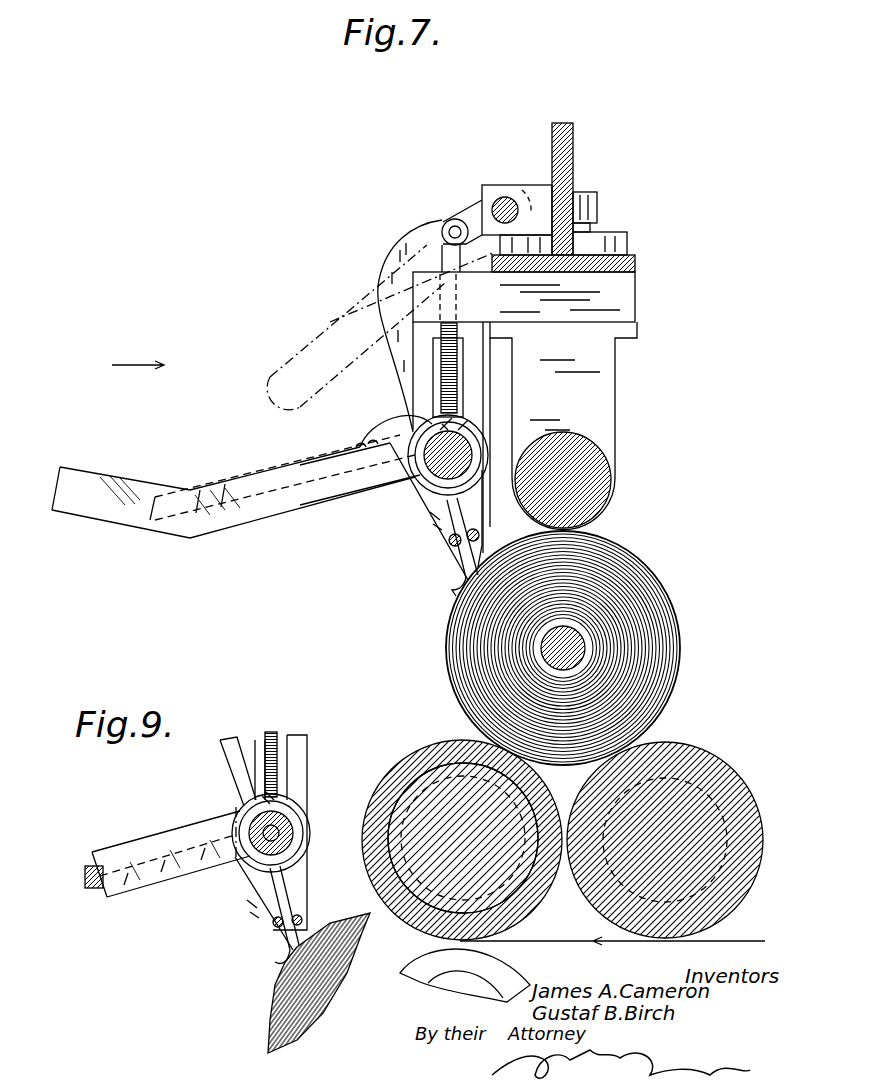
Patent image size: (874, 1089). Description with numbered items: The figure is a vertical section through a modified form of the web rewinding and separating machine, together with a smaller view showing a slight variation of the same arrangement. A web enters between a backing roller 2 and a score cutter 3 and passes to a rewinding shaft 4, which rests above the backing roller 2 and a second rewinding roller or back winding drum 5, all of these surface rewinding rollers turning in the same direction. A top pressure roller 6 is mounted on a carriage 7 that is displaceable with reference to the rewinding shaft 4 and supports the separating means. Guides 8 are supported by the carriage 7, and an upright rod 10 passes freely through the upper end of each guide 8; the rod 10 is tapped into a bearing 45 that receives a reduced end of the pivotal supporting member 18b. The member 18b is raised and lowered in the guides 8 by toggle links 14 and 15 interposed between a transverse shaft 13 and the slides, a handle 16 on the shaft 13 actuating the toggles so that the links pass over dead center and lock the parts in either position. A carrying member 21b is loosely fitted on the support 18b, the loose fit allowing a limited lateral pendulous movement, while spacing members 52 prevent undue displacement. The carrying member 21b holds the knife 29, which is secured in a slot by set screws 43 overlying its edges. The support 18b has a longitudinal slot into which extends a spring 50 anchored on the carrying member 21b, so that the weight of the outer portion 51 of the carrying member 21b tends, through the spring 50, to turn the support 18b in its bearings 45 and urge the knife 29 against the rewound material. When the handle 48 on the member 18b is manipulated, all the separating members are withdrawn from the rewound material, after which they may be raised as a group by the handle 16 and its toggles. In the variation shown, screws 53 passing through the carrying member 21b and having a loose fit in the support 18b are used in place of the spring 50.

In FIG. 7, the backing roller 2 is at (430, 750).
In FIG. 7, the score cutter 3 is at (512, 969).
In FIG. 7, the rewinding shaft 4 is at (582, 653).
In FIG. 7, the second rewinding roller 5 is at (745, 801).
In FIG. 7, the top pressure roller 6 is at (607, 478).
In FIG. 7, the carriage 7 is at (563, 426).
In FIG. 7, the guides 8 is at (138, 355).
In FIG. 9, the upright rod 10 is at (272, 735).
In FIG. 7, the transverse shaft 13 is at (503, 196).
In FIG. 7, the toggle link 14 is at (393, 243).
In FIG. 7, the toggle link 15 is at (462, 203).
In FIG. 7, the handle 16 is at (305, 343).
In FIG. 9, the pivotal supporting member 18b is at (300, 833).
In FIG. 7, the carrying member 21b is at (371, 480).
In FIG. 9, the carrying member 21b is at (198, 864).
In FIG. 7, the knife 29 is at (482, 565).
In FIG. 9, the knife 29 is at (302, 952).
In FIG. 7, the set screws 43 is at (453, 553).
In FIG. 9, the set screws 43 is at (283, 940).
In FIG. 7, the bearings 45 is at (488, 447).
In FIG. 9, the bearings 45 is at (307, 817).
In FIG. 7, the handle 48 is at (200, 492).
In FIG. 7, the spring 50 is at (388, 413).
In FIG. 7, the outer portion 51 is at (108, 510).
In FIG. 7, the spacing members 52 is at (470, 440).
In FIG. 9, the spacing members 52 is at (300, 810).
In FIG. 9, the screws 53 is at (268, 797).